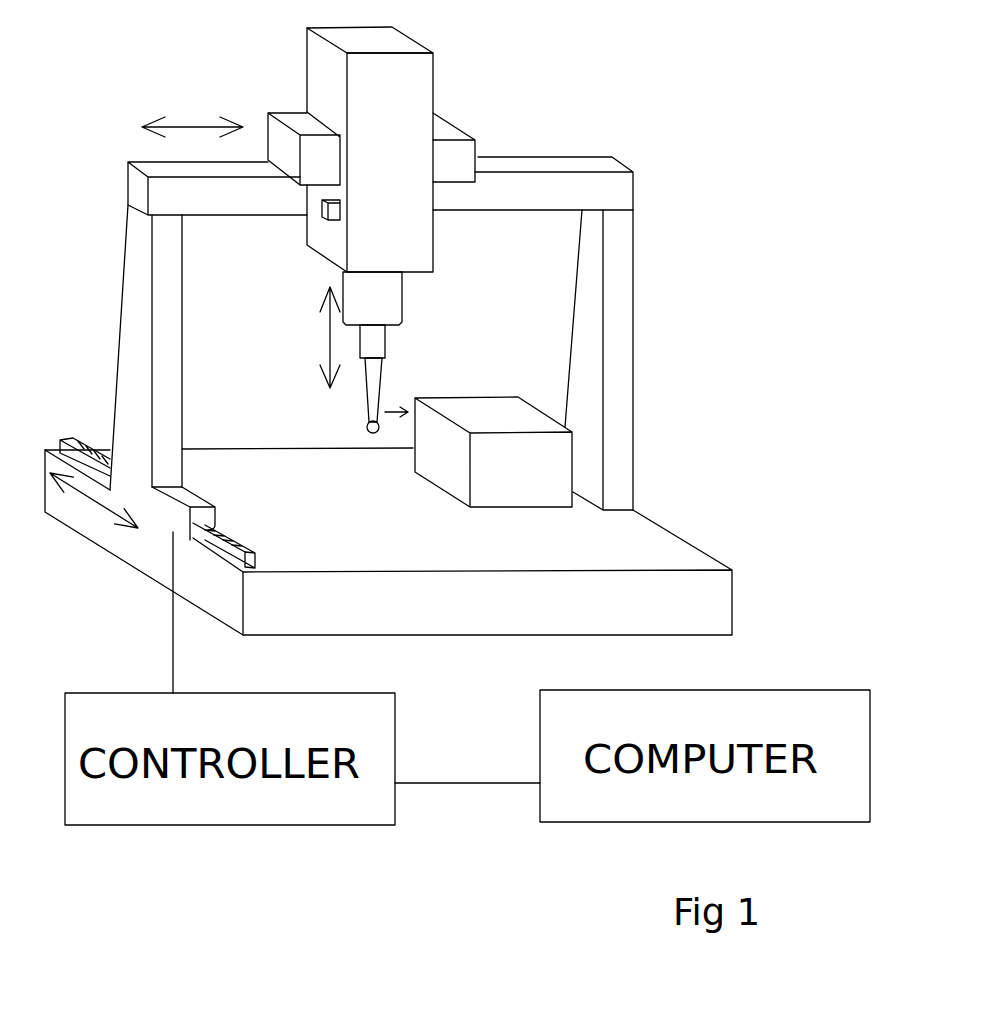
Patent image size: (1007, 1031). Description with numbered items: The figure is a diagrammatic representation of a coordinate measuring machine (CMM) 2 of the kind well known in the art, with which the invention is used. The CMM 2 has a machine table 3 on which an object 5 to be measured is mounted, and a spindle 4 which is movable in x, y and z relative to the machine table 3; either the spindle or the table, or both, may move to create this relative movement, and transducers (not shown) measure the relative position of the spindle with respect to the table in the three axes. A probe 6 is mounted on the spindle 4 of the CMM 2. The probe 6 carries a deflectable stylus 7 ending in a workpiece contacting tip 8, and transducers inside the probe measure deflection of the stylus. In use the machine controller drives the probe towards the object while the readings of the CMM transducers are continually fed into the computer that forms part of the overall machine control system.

The coordinate measuring machine 2 is at (553, 112).
The machine table 3 is at (687, 558).
The spindle 4 is at (382, 300).
The object 5 is at (530, 482).
The probe 6 is at (395, 355).
The deflectable stylus 7 is at (367, 401).
The workpiece contacting tip 8 is at (372, 433).